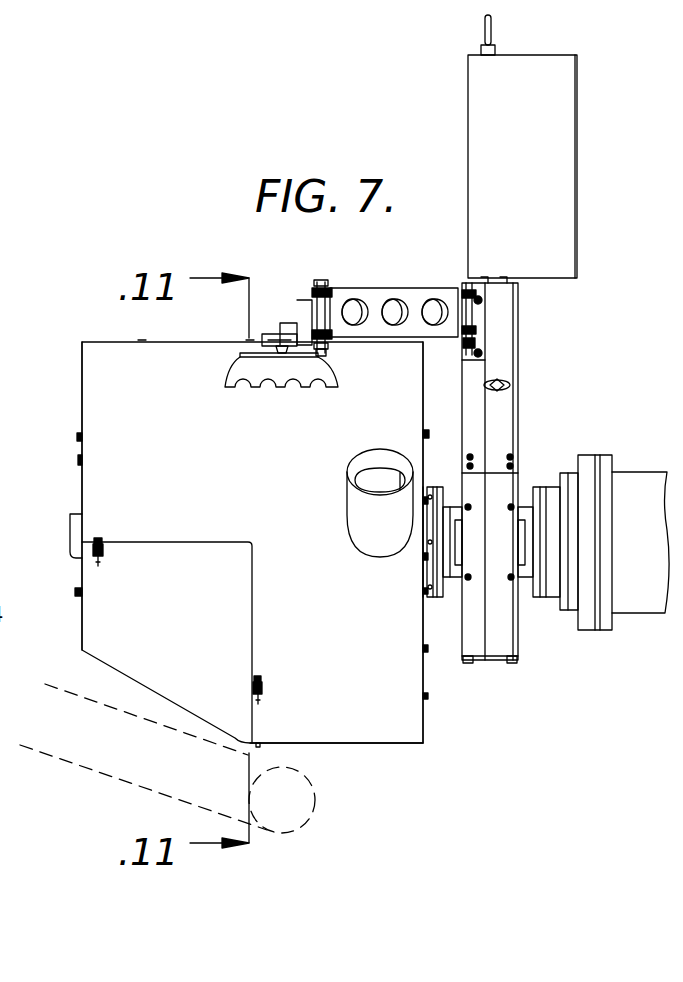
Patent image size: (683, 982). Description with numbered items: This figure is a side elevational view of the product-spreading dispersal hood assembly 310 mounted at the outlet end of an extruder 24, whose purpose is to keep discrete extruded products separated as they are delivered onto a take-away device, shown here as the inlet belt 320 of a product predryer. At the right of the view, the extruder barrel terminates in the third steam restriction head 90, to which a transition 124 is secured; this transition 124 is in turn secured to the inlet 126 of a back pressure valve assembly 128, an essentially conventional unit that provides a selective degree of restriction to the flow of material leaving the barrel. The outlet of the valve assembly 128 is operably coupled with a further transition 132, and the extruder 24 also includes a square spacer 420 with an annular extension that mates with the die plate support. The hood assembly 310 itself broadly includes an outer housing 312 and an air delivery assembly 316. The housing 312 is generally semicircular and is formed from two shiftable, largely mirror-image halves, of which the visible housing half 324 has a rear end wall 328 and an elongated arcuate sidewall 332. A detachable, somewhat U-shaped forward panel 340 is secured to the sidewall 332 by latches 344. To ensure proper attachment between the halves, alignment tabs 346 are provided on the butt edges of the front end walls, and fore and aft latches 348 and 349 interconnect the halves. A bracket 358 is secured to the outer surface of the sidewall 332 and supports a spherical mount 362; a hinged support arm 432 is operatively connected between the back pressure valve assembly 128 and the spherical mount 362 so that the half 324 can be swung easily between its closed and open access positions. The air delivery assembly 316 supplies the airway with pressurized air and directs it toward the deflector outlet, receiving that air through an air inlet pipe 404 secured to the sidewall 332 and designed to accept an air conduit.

The product-spreading dispersal hood assembly 310 is at (206, 218).
The outer housing 312 is at (83, 306).
The housing half 324 is at (79, 368).
The fore latch 348 is at (77, 437).
The alignment tabs 346 is at (78, 461).
The forward panel 340 is at (216, 606).
The latches 344 is at (82, 591).
The rear end wall 328 is at (428, 685).
The aft latch 349 is at (440, 428).
The sidewall 332 is at (360, 712).
The square spacer 420 is at (428, 564).
The air delivery assembly 316 is at (330, 467).
The air inlet pipe 404 is at (352, 492).
The bracket 358 is at (280, 380).
The spherical mount 362 is at (275, 338).
The hinged support arm 432 is at (414, 296).
The back pressure valve assembly 128 is at (540, 325).
The transition 132 is at (446, 578).
The inlet 126 is at (520, 505).
The transition 124 is at (557, 593).
The extruder 24 is at (649, 440).
The third steam restriction head 90 is at (640, 604).
The inlet belt 320 is at (118, 802).